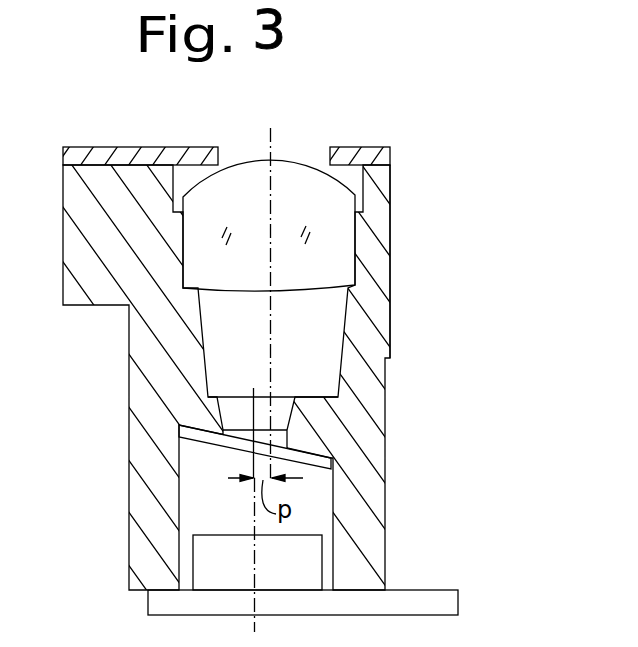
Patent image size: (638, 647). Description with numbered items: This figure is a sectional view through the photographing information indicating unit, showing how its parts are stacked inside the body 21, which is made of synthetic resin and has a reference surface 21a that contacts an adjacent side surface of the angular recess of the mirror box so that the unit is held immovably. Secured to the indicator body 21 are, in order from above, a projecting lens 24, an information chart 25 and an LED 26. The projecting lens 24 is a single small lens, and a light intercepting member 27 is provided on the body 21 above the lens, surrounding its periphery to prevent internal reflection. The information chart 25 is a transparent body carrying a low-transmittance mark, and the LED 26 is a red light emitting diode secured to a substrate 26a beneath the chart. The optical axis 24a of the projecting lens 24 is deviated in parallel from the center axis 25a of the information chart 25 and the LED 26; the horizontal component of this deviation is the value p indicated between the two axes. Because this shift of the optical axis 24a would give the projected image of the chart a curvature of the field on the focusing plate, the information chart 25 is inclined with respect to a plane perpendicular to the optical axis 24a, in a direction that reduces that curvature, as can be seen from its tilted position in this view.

The body 21 is at (383, 306).
The reference surface 21a is at (392, 178).
The projecting lens 24 is at (346, 231).
The optical axis 24a is at (269, 213).
The information chart 25 is at (313, 454).
The center axis 25a is at (253, 389).
The LED 26 is at (315, 563).
The substrate 26a is at (452, 604).
The light intercepting member 27 is at (121, 160).